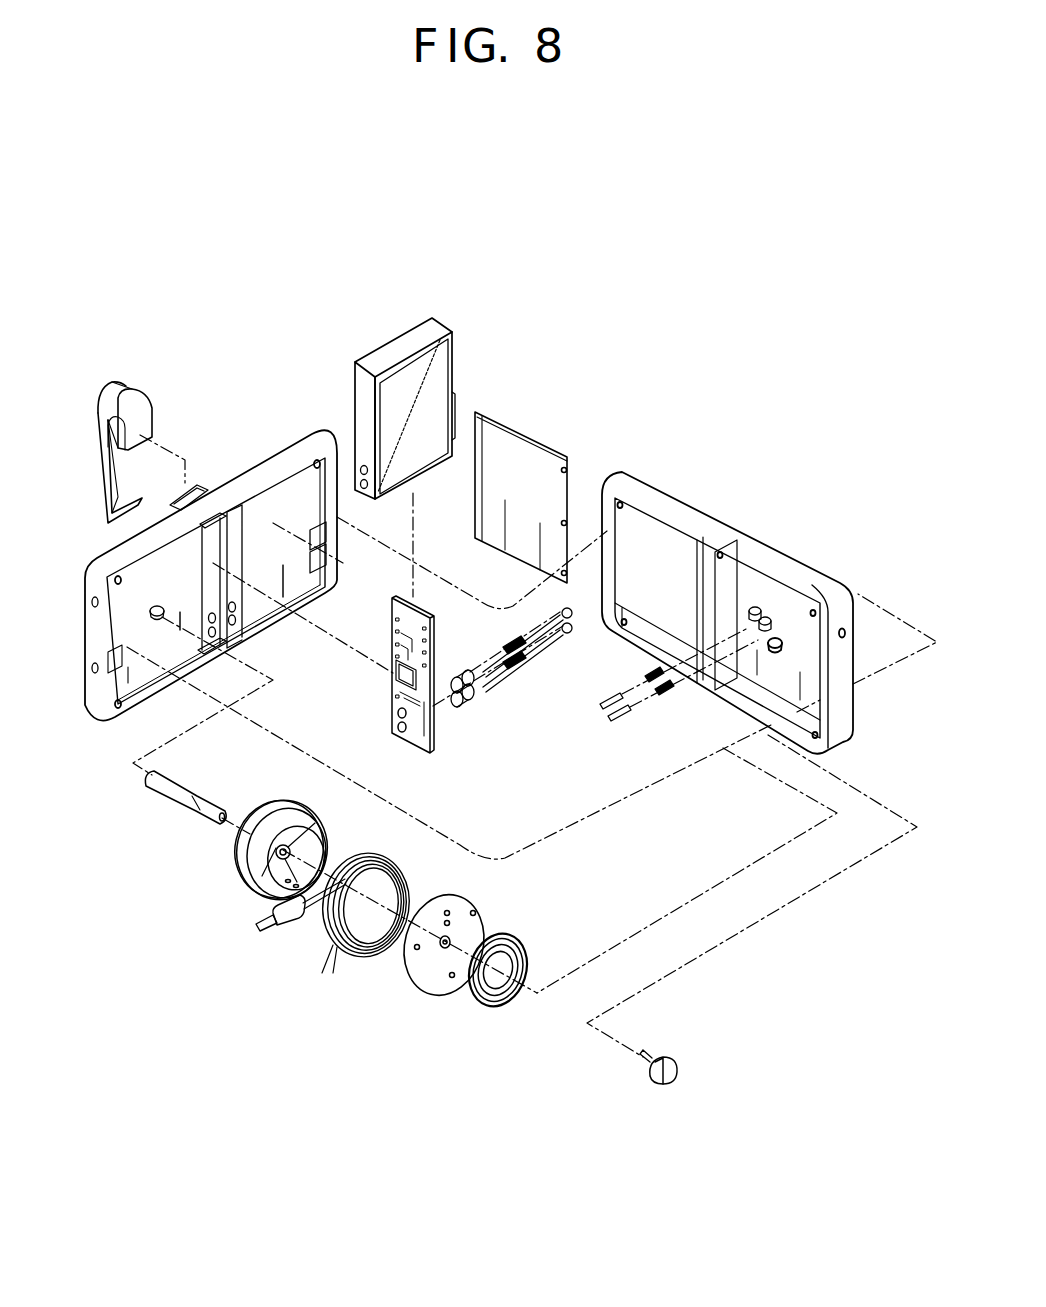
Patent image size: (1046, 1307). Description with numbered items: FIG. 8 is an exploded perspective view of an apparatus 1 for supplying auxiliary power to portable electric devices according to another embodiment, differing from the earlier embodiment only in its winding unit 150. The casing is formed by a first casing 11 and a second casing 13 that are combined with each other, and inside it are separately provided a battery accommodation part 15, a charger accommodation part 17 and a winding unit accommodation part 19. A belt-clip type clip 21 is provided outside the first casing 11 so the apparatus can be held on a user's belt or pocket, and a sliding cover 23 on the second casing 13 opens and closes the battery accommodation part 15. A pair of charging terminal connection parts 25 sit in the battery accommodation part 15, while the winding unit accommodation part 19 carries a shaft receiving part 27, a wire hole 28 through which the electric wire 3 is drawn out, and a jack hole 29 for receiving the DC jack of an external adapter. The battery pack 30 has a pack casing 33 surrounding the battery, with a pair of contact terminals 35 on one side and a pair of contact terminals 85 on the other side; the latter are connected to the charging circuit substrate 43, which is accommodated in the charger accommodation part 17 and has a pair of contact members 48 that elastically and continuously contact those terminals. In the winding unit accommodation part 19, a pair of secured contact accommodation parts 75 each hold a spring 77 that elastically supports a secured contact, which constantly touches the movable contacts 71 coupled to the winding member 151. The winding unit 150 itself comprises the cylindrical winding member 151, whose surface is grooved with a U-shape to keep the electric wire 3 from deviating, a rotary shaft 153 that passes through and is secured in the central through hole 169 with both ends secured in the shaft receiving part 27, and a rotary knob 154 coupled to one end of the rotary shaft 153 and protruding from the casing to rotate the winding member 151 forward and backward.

The apparatus for supplying auxiliary power 1 is at (722, 322).
The electric wire 3 is at (407, 886).
The first casing 11 is at (275, 468).
The second casing 13 is at (665, 497).
The battery accommodation part 15 is at (282, 556).
The charger accommodation part 17 is at (233, 527).
The winding unit accommodation part 19 is at (197, 601).
The clip 21 is at (157, 396).
The sliding cover 23 is at (535, 440).
The charging terminal connection parts 25 is at (328, 560).
The shaft receiving part 27 is at (159, 622).
The wire hole 28 is at (90, 608).
The jack hole 29 is at (90, 673).
The battery pack 30 is at (460, 335).
The pack casing 33 is at (360, 395).
The contact terminals 35 is at (460, 400).
The charging circuit substrate 43 is at (440, 740).
The contact members 48 is at (528, 670).
The movable contacts 71 is at (516, 962).
The secured contact accommodation parts 75 is at (753, 604).
The spring 77 is at (664, 690).
The contact terminals 85 is at (373, 482).
The winding unit 150 is at (170, 936).
The winding member 151 is at (410, 962).
The rotary shaft 153 is at (186, 806).
The rotary knob 154 is at (665, 1088).
The through hole 169 is at (300, 833).